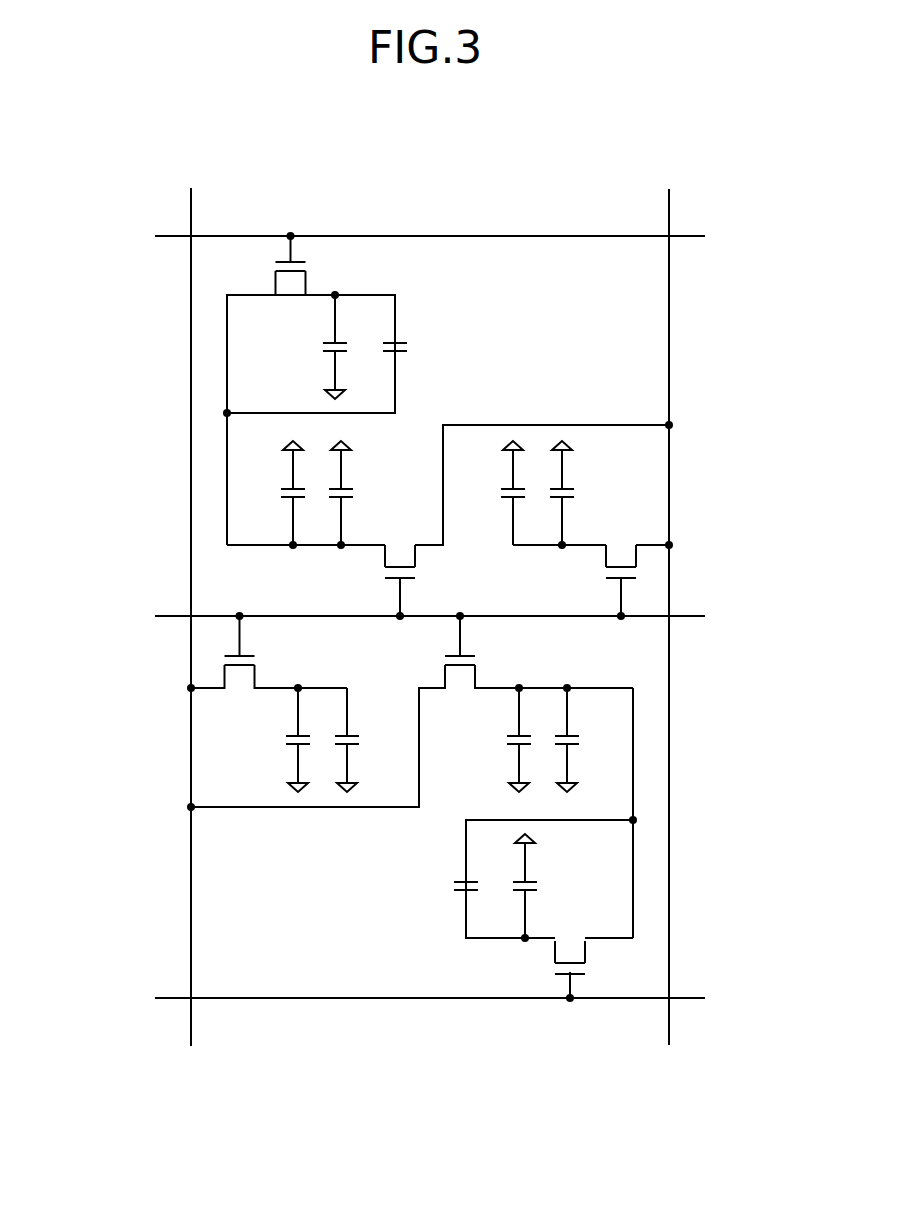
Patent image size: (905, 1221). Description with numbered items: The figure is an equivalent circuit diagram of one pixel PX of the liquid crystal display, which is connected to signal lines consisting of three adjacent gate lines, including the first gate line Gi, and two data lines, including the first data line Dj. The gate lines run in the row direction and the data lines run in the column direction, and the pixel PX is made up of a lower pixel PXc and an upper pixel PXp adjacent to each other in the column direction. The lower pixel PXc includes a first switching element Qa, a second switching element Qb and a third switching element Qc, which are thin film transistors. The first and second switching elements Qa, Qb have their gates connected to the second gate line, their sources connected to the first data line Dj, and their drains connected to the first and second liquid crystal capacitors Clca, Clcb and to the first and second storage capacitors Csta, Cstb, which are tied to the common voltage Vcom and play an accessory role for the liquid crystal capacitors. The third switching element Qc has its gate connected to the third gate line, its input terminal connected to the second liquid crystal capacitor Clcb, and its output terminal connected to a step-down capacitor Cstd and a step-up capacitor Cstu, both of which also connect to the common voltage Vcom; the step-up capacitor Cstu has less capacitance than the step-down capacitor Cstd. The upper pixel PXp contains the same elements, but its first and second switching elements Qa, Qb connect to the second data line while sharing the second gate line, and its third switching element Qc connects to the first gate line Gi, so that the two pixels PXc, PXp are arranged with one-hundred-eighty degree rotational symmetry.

The first data line Dj is at (189, 598).
The first gate line Gi is at (407, 234).
The upper pixel PXp is at (480, 256).
The lower pixel PXc is at (307, 977).
The pixel PX is at (757, 492).
The first switching element Qa is at (431, 612).
The second switching element Qb is at (430, 612).
The third switching element Qc is at (431, 617).
The first storage capacitor Csta is at (430, 539).
The second storage capacitor Cstb is at (430, 616).
The step-up capacitor Cstu is at (430, 616).
The step-down capacitor Cstd is at (551, 890).
The first liquid crystal capacitor Clca is at (430, 616).
The second liquid crystal capacitor Clcb is at (432, 616).
The common voltage Vcom is at (434, 614).